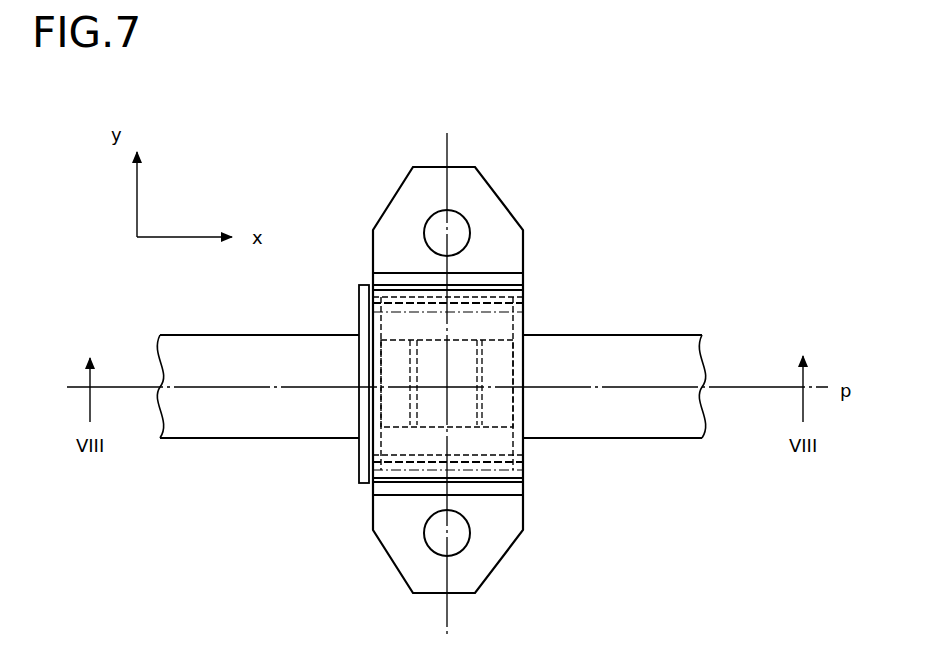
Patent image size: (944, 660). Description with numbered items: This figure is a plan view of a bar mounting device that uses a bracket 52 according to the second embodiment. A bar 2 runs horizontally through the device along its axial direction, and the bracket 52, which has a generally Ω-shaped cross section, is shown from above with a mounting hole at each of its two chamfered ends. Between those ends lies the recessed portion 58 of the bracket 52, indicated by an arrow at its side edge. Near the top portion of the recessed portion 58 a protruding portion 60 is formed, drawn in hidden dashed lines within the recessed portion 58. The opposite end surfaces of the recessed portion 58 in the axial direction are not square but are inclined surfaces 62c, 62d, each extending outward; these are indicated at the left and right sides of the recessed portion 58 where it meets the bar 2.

The rod 2 is at (652, 347).
The bracket 52 is at (533, 227).
The recessed portion 58 is at (529, 356).
The protruding portion 60 is at (460, 355).
The inclined surface 62c is at (365, 453).
The inclined surface 62d is at (525, 453).